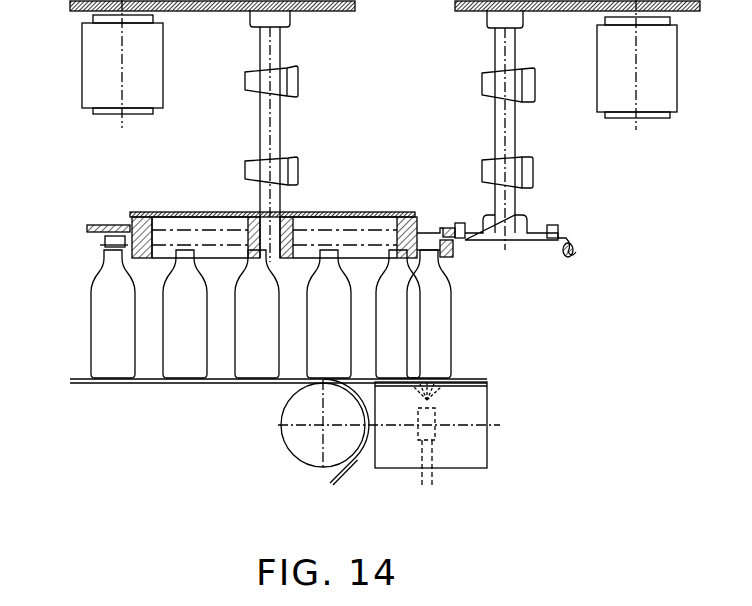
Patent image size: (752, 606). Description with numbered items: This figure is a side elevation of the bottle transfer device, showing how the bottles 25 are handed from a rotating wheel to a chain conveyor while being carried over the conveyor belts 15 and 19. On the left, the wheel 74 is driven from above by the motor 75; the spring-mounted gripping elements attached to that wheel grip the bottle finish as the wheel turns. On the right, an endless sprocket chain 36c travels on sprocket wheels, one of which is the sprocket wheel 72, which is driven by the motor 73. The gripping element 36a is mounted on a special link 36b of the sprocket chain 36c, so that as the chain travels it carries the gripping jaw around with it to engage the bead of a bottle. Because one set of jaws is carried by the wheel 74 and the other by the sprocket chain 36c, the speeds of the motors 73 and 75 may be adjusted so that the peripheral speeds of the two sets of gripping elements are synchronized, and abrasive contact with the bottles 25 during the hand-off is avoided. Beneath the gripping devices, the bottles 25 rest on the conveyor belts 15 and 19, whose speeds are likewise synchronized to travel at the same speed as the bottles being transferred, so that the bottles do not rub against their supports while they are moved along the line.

The conveyor belt 15 is at (475, 381).
The conveyor belt 19 is at (155, 383).
The bottles 25 is at (452, 326).
The gripping element 36a is at (573, 246).
The special link 36b is at (452, 250).
The sprocket chain 36c is at (462, 226).
The sprocket wheel 72 is at (525, 227).
The motor 73 is at (677, 96).
The wheel 74 is at (307, 212).
The motor 75 is at (83, 80).